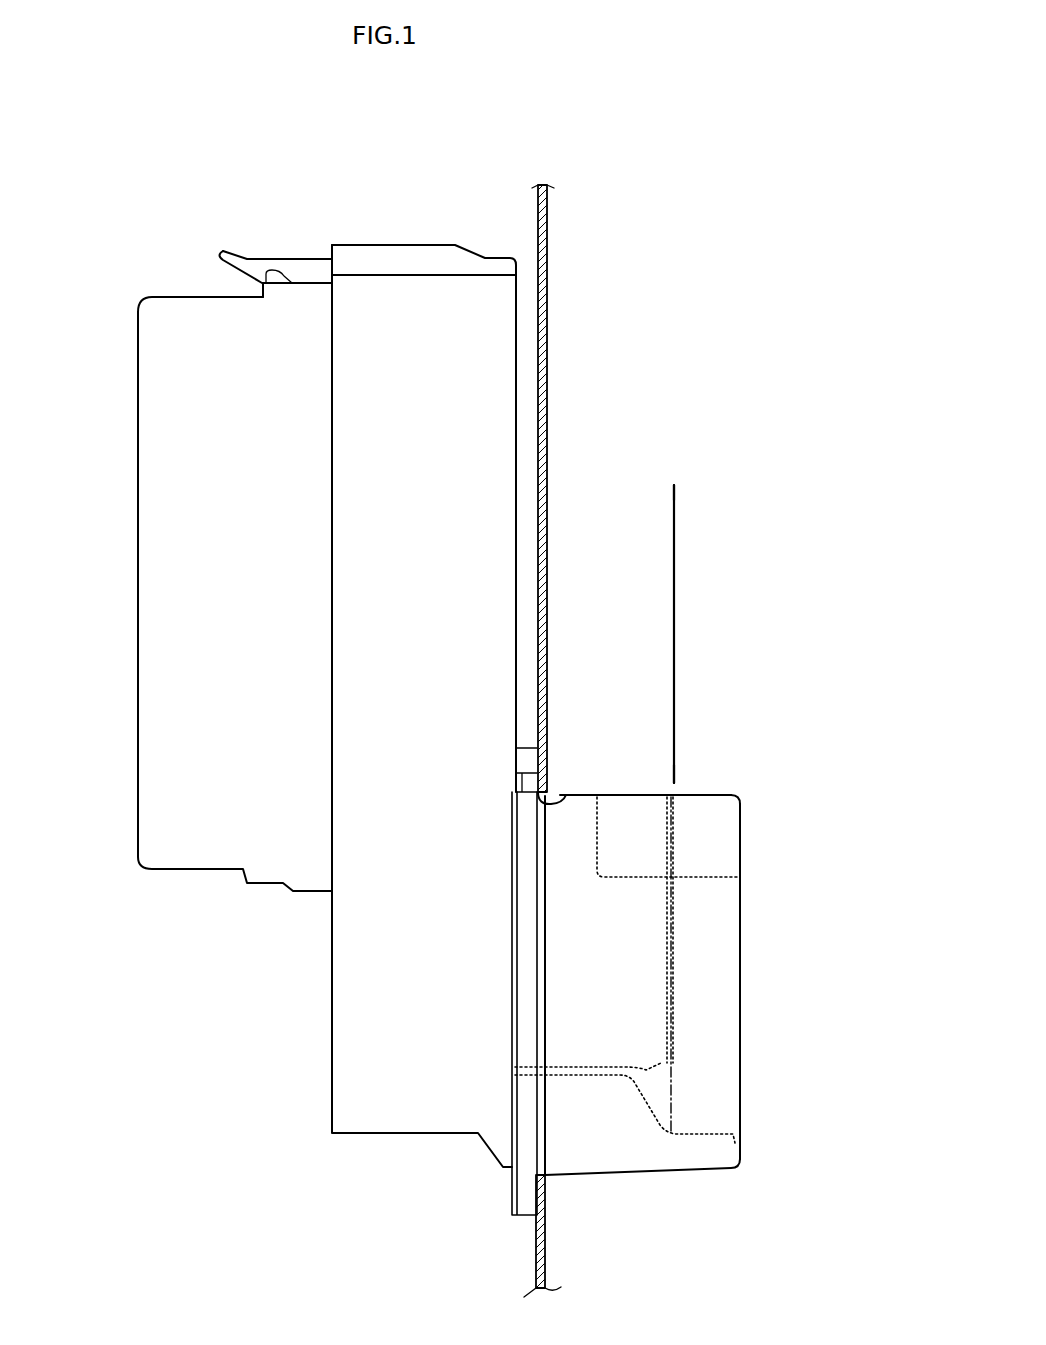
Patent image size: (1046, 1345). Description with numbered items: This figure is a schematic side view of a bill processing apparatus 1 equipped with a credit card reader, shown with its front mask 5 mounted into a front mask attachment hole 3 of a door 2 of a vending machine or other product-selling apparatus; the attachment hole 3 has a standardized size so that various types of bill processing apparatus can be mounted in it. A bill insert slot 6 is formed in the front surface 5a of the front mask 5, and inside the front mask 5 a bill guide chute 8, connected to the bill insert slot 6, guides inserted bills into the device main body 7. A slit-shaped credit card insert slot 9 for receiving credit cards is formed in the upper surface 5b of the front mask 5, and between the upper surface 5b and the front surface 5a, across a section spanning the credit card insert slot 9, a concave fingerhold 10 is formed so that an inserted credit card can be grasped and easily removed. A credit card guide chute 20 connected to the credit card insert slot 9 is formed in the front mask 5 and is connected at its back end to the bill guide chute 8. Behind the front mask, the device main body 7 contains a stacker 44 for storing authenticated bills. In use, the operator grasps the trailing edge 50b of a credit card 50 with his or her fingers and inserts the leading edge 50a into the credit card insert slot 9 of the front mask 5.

The bill processing apparatus 1 is at (139, 249).
The door 2 is at (548, 288).
The front mask attachment hole 3 is at (553, 797).
The front mask 5 is at (553, 944).
The front surface 5a is at (740, 990).
The upper surface 5b is at (628, 795).
The bill insert slot 6 is at (678, 1055).
The device main body 7 is at (343, 1000).
The bill guide chute 8 is at (718, 1093).
The credit card insert slot 9 is at (680, 797).
The concave fingerhold 10 is at (700, 877).
The credit card guide chute 20 is at (680, 955).
The stacker 44 is at (155, 665).
The credit card 50 is at (675, 603).
The leading edge 50a is at (680, 784).
The trailing edge 50b is at (674, 487).